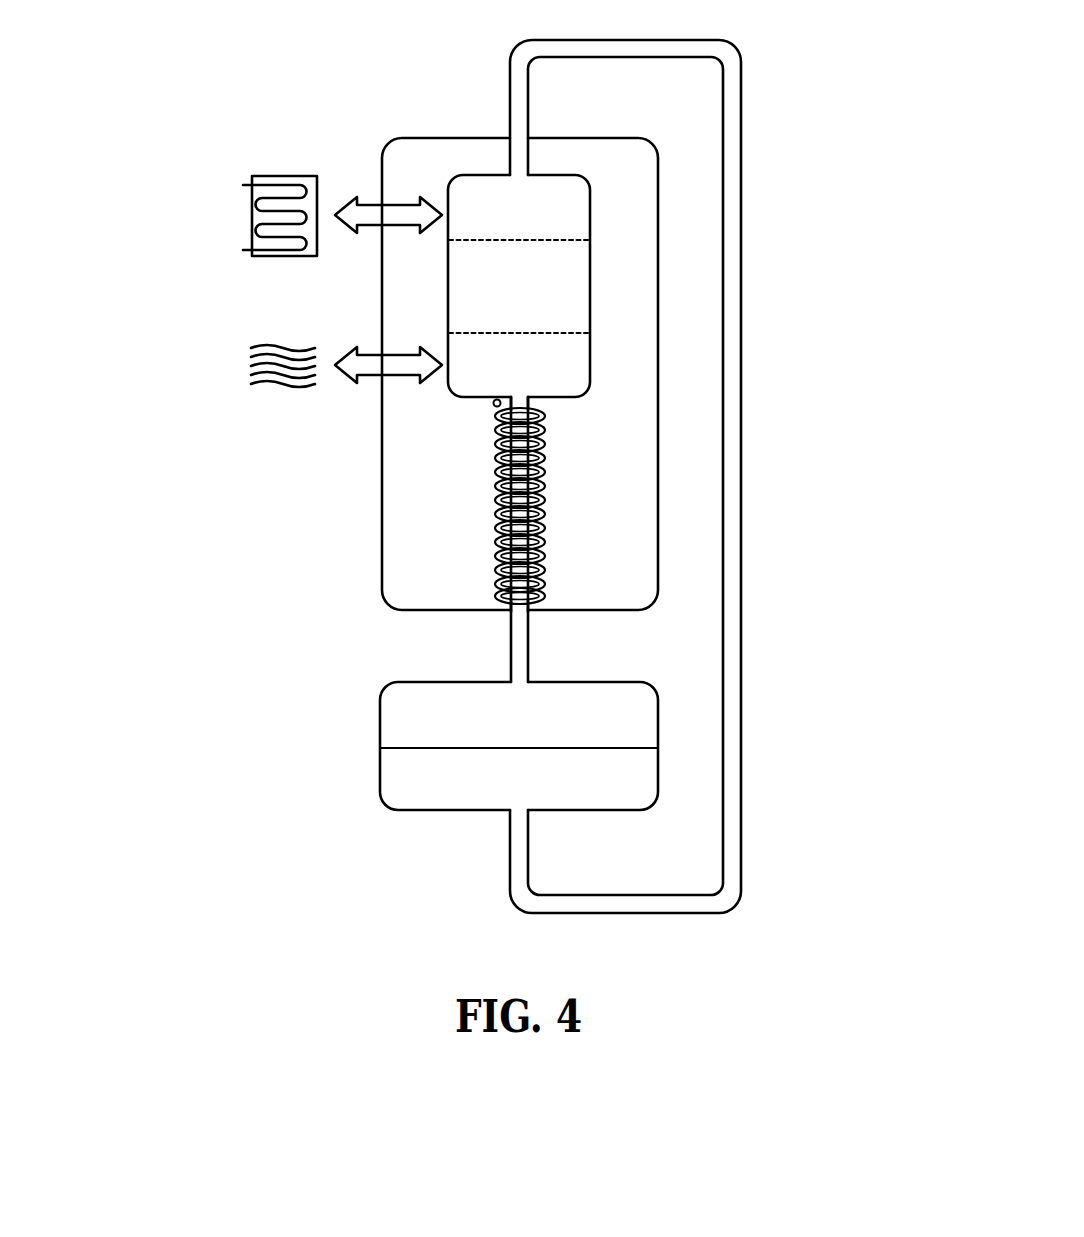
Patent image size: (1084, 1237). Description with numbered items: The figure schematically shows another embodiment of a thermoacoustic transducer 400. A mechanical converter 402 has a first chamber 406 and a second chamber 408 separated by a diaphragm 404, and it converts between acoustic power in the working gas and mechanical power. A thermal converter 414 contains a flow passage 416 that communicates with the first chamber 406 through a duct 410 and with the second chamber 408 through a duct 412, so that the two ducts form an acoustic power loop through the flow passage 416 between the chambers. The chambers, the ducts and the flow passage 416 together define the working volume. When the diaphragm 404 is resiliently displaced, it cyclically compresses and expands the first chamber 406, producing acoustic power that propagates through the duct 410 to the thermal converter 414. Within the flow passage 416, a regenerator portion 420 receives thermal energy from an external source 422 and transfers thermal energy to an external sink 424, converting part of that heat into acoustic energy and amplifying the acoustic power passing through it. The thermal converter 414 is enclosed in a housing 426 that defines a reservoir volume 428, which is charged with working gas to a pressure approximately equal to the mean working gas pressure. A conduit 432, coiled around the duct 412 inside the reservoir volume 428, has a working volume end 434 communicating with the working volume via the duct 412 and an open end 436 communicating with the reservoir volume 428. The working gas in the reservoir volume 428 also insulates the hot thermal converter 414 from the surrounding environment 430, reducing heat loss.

The thermoacoustic transducer 400 is at (771, 154).
The mechanical converter 402 is at (392, 670).
The diaphragm 404 is at (626, 749).
The first chamber 406 is at (398, 776).
The second chamber 408 is at (398, 716).
The duct 410 is at (742, 611).
The duct 412 is at (510, 652).
The thermal converter 414 is at (447, 164).
The flow passage 416 is at (530, 372).
The regenerator portion 420 is at (480, 287).
The external source 422 is at (282, 401).
The external sink 424 is at (285, 163).
The housing 426 is at (382, 503).
The reservoir volume 428 is at (452, 518).
The environment 430 is at (200, 573).
The conduit 432 is at (541, 490).
The working volume end 434 is at (521, 601).
The open end 436 is at (494, 404).